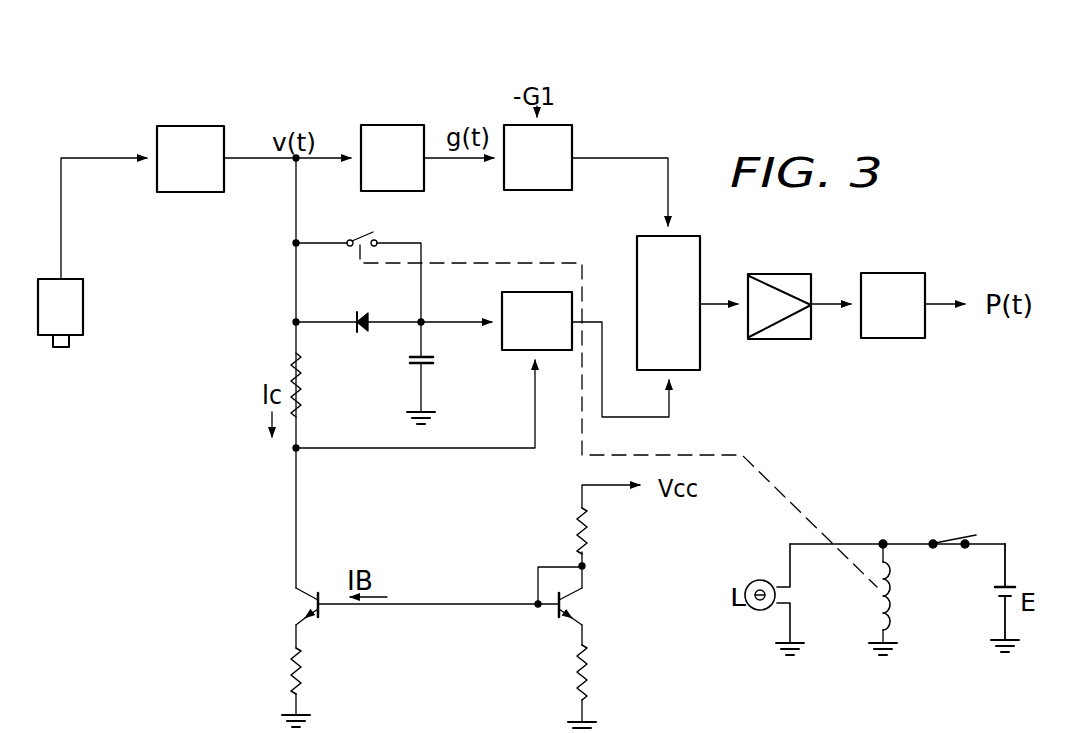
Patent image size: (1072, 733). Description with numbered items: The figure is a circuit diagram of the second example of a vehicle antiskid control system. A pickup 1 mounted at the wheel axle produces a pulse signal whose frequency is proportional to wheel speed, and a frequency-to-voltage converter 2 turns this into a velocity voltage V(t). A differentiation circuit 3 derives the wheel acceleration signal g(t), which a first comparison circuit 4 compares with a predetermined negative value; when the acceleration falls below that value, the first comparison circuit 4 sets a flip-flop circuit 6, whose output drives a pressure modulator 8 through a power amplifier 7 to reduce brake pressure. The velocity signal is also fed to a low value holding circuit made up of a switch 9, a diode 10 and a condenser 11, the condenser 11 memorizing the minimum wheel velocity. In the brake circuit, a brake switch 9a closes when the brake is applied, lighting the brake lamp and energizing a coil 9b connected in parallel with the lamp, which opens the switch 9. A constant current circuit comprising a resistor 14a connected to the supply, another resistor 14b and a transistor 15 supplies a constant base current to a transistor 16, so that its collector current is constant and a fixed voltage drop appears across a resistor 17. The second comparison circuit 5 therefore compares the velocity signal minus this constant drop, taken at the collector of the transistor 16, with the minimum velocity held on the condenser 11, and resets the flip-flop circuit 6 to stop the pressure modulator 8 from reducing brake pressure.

The pickup 1 is at (80, 322).
The frequency-to-voltage converter 2 is at (186, 128).
The differentiation circuit 3 is at (380, 128).
The first comparison circuit 4 is at (567, 135).
The second comparison circuit 5 is at (537, 321).
The flip-flop circuit 6 is at (632, 270).
The power amplifier 7 is at (775, 272).
The pressure modulator 8 is at (900, 280).
The switch 9 is at (358, 237).
The brake switch 9a is at (950, 540).
The coil 9b is at (886, 590).
The diode 10 is at (364, 311).
The condenser 11 is at (436, 364).
The resistor 14a is at (592, 538).
The resistor 14b is at (592, 674).
The transistor 15 is at (555, 617).
The transistor 16 is at (303, 604).
The resistor 17 is at (308, 398).